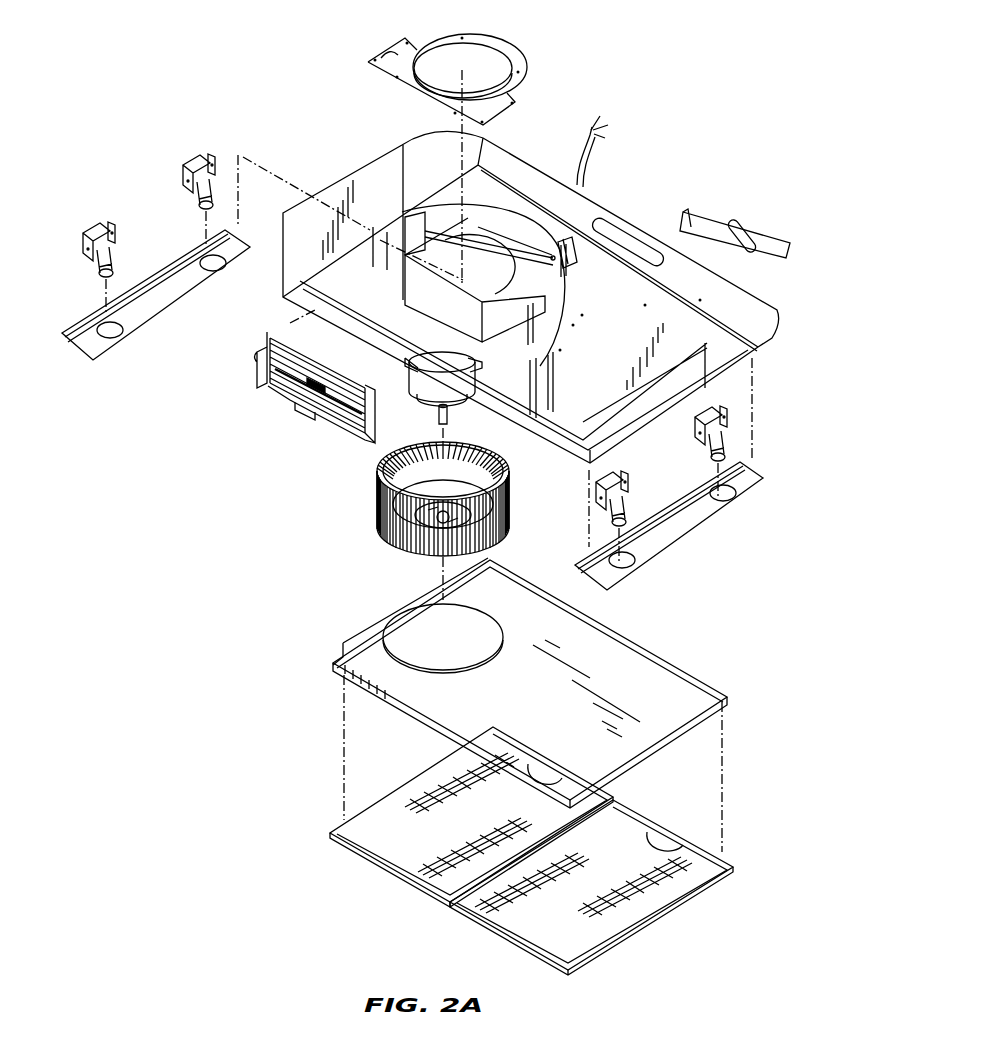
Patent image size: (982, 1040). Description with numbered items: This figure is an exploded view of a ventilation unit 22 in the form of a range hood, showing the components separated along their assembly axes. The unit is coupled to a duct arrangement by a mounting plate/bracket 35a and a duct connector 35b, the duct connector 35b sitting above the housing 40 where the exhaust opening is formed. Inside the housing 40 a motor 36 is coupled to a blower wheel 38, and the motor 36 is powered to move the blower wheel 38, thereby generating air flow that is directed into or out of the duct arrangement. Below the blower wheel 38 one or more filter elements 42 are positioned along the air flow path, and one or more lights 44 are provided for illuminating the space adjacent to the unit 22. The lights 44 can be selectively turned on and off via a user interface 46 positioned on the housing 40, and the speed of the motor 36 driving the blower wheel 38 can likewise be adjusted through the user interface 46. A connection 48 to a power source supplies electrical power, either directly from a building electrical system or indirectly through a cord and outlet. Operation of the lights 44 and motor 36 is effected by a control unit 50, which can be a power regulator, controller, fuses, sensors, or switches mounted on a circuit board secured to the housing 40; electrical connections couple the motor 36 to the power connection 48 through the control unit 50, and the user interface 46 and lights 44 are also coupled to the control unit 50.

The ventilation unit 22 is at (202, 569).
The mounting plate/bracket 35a is at (273, 386).
The duct connector 35b is at (381, 57).
The motor 36 is at (423, 418).
The blower wheel 38 is at (380, 528).
The housing 40 is at (757, 320).
The filter element 42 is at (372, 835).
The light 44 is at (153, 310).
The user interface 46 is at (698, 220).
The power connection 48 is at (578, 150).
The control unit 50 is at (588, 266).